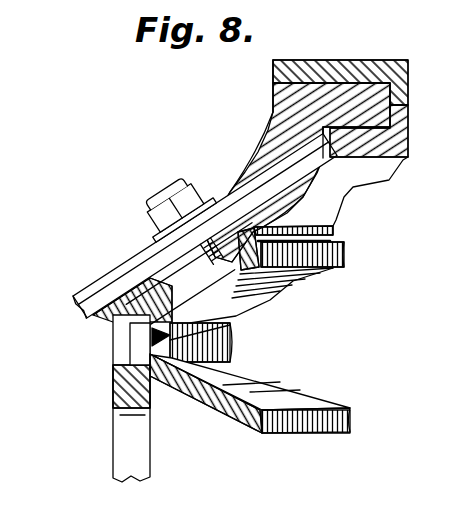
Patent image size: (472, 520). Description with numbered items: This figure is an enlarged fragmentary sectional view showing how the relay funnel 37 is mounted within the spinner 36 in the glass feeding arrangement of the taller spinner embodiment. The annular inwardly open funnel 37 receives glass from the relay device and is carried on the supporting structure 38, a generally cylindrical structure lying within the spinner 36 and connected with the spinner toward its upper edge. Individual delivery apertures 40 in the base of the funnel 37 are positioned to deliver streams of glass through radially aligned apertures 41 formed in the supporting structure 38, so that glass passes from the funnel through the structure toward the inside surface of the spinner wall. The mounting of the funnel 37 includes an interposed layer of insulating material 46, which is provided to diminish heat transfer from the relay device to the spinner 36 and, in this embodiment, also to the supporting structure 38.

The spinner 36 is at (99, 287).
The annular inwardly open funnel 37 is at (350, 465).
The supporting structure 38 is at (120, 423).
The delivery apertures 40 is at (186, 320).
The radially aligned apertures 41 is at (118, 357).
The layer of insulating material 46 is at (197, 293).